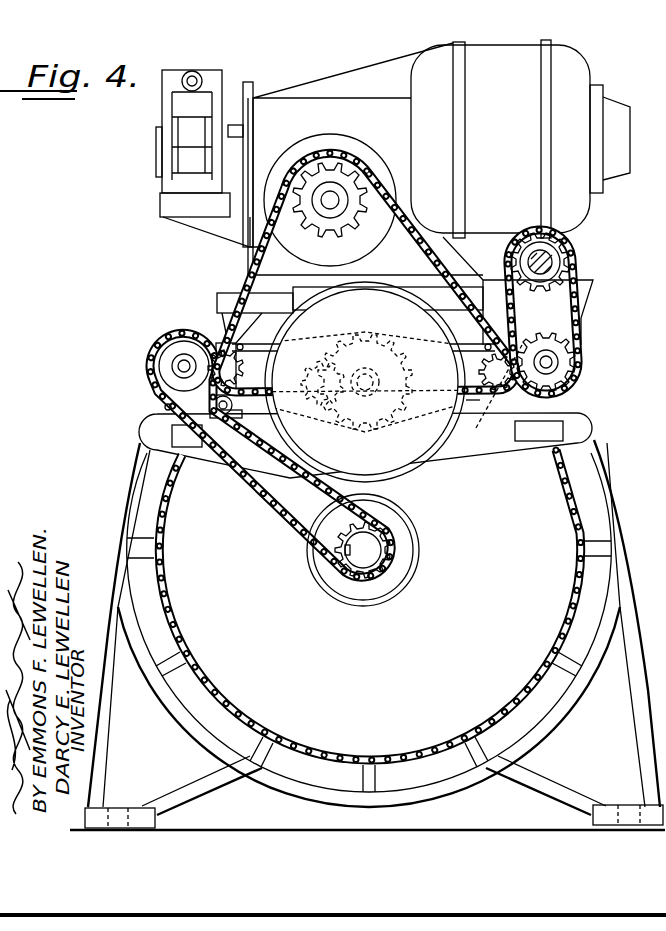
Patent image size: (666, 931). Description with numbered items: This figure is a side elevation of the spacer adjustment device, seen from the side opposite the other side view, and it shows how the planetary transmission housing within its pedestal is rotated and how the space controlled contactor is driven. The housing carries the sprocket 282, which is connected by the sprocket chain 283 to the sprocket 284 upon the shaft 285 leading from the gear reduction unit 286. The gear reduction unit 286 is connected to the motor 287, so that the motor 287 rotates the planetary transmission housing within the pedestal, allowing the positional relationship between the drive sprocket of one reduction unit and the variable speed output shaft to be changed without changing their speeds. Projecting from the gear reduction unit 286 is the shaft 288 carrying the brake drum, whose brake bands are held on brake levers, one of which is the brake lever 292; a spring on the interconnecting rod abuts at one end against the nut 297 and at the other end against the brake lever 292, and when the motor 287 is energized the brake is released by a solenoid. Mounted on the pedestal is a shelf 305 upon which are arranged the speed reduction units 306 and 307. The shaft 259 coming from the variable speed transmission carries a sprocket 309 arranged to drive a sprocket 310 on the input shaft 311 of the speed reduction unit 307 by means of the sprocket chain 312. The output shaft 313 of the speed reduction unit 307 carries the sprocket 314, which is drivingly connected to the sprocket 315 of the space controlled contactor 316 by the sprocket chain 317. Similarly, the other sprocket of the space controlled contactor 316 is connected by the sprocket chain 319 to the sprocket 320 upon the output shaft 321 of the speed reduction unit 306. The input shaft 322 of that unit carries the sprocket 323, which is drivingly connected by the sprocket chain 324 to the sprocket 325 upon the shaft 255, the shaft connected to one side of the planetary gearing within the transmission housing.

The shaft 255 is at (375, 559).
The shaft 259 is at (548, 258).
The sprocket 282 is at (178, 532).
The sprocket chain 283 is at (163, 566).
The sprocket 284 is at (295, 163).
The shaft 285 is at (340, 190).
The gear reduction unit 286 is at (335, 73).
The motor 287 is at (586, 73).
The shaft 288 is at (236, 124).
The brake lever 292 is at (163, 104).
The nut 297 is at (192, 71).
The shelf 305 is at (150, 431).
The speed reduction unit 306 is at (165, 407).
The speed reduction unit 307 is at (556, 398).
The sprocket 309 is at (566, 271).
The sprocket 310 is at (565, 366).
The input shaft 311 is at (556, 361).
The sprocket chain 312 is at (582, 318).
The output shaft 313 is at (535, 340).
The sprocket 314 is at (508, 392).
The sprocket 315 is at (407, 368).
The space controlled contactor 316 is at (405, 460).
The sprocket chain 317 is at (478, 400).
The sprocket chain 319 is at (262, 345).
The sprocket 320 is at (226, 355).
The output shaft 321 is at (200, 332).
The input shaft 322 is at (178, 367).
The sprocket 323 is at (170, 352).
The sprocket chain 324 is at (260, 491).
The sprocket 325 is at (315, 543).